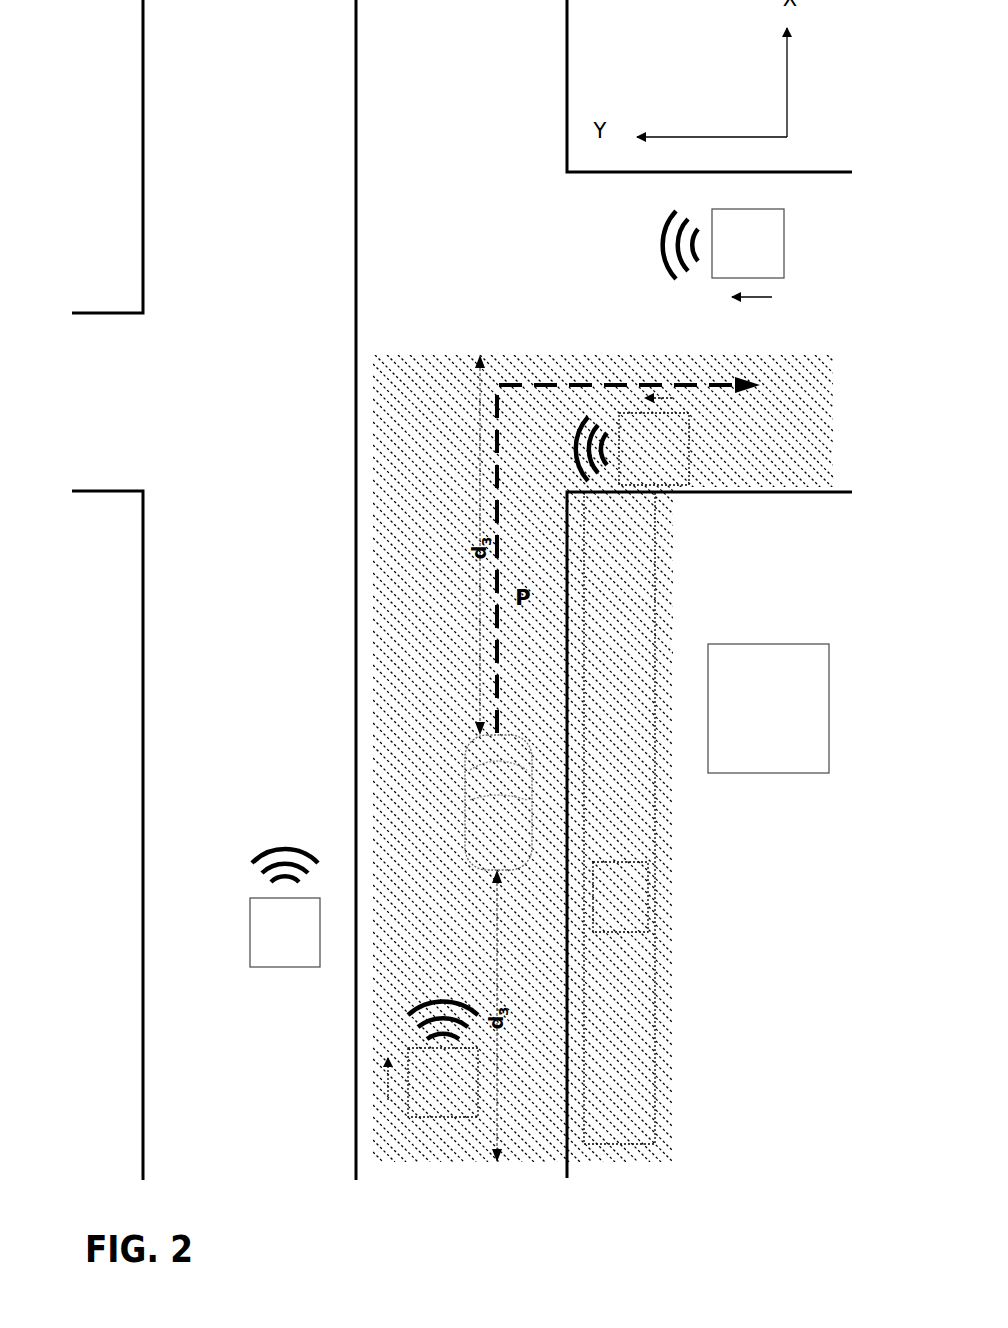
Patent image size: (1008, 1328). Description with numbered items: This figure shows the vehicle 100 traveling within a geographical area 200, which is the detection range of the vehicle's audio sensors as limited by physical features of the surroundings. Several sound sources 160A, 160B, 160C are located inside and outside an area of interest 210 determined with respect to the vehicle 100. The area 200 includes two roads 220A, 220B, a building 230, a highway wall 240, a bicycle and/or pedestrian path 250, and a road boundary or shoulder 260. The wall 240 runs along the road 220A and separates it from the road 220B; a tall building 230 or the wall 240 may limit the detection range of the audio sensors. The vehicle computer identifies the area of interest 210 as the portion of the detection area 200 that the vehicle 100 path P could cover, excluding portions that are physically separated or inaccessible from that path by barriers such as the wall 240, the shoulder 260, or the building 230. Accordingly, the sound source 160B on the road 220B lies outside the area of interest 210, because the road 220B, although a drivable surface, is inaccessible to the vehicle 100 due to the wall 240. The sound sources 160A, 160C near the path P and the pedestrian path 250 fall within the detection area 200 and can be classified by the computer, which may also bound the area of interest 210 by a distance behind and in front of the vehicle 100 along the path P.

The vehicle 100 is at (498, 802).
The sound source 160A is at (620, 862).
The sound source 160B is at (285, 908).
The sound source 160C is at (632, 437).
The area 200 is at (750, 982).
The area of interest 210 is at (603, 758).
The road 220A is at (639, 122).
The road 220B is at (192, 590).
The building 230 is at (768, 708).
The wall 240 is at (353, 613).
The bicycle and/or pedestrian path 250 is at (655, 1108).
The road boundary (shoulder) 260 is at (568, 1170).